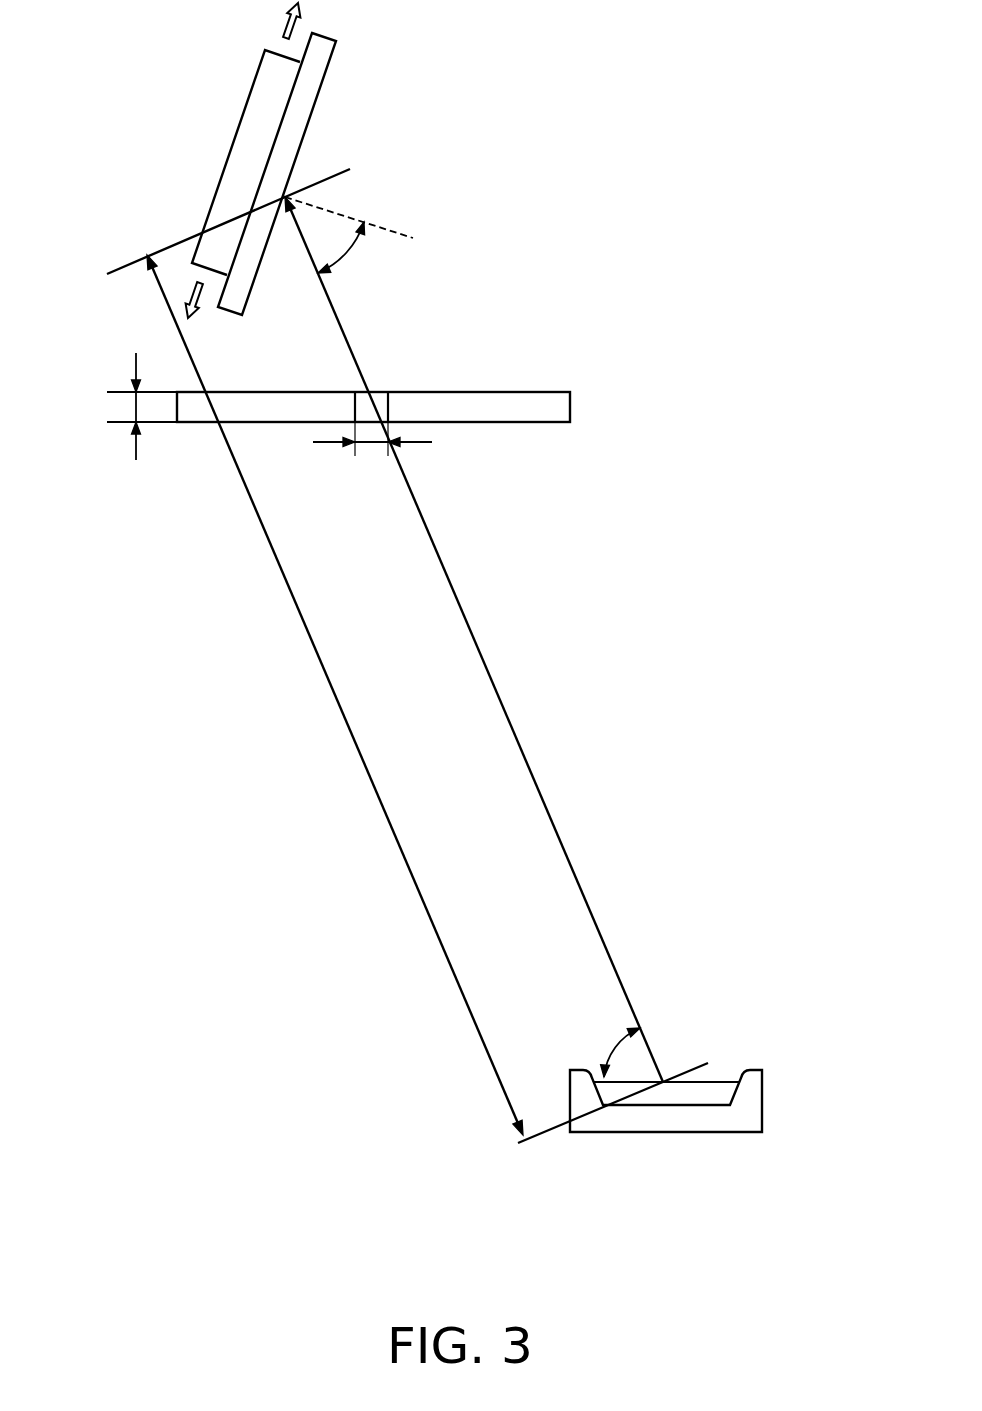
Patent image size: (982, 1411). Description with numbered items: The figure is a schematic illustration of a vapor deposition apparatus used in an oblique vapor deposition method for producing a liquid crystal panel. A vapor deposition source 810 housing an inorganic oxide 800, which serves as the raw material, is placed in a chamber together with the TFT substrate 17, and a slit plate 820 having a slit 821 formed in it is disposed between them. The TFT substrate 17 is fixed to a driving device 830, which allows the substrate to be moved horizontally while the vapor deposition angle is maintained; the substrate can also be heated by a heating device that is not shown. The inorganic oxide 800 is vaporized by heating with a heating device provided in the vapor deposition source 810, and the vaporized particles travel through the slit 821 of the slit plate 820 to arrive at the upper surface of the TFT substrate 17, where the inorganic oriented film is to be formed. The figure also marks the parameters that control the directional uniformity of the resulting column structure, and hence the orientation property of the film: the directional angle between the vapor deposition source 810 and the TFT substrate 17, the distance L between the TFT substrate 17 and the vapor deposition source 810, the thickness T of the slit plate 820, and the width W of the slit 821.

The TFT substrate 17 is at (320, 58).
The driving device 830 is at (252, 138).
The slit plate 820 is at (556, 408).
The slit 821 is at (380, 402).
The inorganic oxide 800 is at (713, 1093).
The vapor deposition source 810 is at (780, 1018).
The distance L is at (350, 733).
The thickness T is at (136, 405).
The width W is at (370, 443).